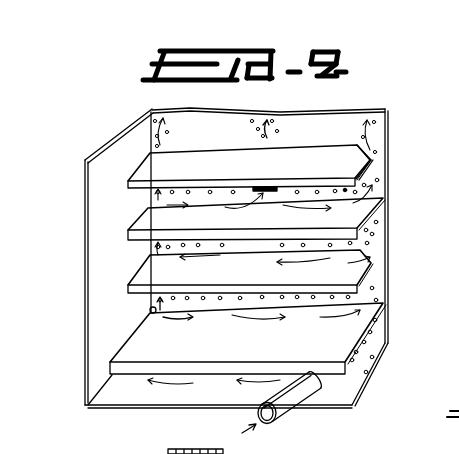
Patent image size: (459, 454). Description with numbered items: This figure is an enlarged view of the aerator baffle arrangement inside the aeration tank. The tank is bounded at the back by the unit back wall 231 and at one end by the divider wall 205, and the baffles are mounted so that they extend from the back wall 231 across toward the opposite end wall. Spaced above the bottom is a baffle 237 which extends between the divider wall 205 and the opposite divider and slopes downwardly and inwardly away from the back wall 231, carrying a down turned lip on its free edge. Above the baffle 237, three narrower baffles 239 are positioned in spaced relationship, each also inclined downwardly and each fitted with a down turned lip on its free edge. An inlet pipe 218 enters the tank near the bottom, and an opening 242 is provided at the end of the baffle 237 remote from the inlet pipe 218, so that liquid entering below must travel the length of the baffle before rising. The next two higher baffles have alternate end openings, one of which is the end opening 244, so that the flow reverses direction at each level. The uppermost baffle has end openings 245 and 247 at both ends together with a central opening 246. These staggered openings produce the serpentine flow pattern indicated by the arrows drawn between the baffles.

The divider wall 205 is at (107, 270).
The inlet pipe 218 is at (292, 403).
The unit back wall 231 is at (346, 118).
The baffle 237 is at (296, 349).
The narrower baffles 239 is at (258, 279).
The opening 242 is at (162, 307).
The end opening 244 is at (169, 204).
The end opening 245 is at (378, 163).
The central opening 246 is at (264, 152).
The end opening 247 is at (160, 151).